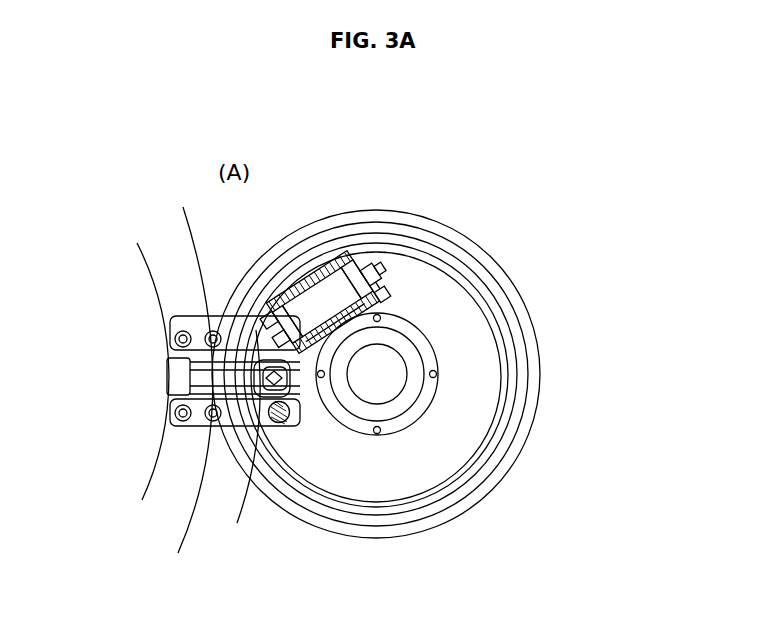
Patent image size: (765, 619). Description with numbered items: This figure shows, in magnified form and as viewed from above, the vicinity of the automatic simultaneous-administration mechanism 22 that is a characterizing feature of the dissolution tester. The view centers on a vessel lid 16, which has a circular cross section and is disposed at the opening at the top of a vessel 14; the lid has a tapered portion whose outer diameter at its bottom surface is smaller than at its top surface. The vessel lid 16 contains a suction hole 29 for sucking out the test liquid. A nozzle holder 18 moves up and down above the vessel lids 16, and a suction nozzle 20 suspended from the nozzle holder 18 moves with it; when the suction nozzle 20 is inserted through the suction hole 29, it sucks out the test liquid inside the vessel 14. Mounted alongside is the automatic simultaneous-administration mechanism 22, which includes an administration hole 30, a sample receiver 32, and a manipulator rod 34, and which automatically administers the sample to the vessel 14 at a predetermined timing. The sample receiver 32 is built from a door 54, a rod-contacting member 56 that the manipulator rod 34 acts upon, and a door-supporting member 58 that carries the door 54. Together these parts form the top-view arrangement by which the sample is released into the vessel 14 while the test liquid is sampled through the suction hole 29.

The vessel 14 is at (532, 311).
The vessel lid 16 is at (490, 265).
The nozzle holder 18 is at (189, 465).
The suction nozzle 20 is at (219, 380).
The automatic simultaneous-administration mechanism 22 is at (150, 186).
The suction hole 29 is at (287, 382).
The administration hole 30 is at (240, 318).
The sample receiver 32 is at (304, 185).
The manipulator rod 34 is at (280, 290).
The door 54 is at (338, 273).
The rod-contacting member 56 is at (272, 320).
The door-supporting member 58 is at (390, 272).